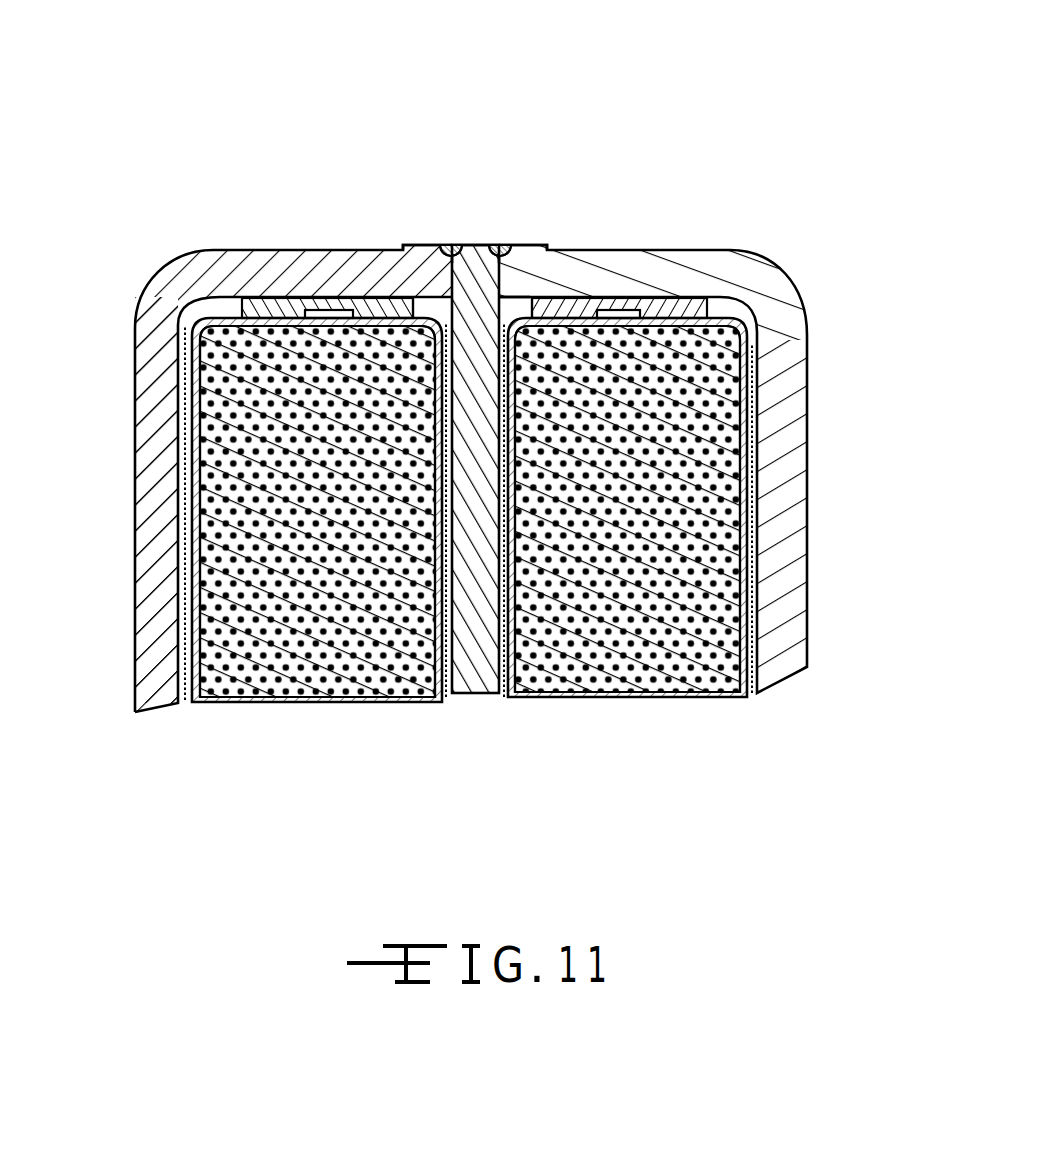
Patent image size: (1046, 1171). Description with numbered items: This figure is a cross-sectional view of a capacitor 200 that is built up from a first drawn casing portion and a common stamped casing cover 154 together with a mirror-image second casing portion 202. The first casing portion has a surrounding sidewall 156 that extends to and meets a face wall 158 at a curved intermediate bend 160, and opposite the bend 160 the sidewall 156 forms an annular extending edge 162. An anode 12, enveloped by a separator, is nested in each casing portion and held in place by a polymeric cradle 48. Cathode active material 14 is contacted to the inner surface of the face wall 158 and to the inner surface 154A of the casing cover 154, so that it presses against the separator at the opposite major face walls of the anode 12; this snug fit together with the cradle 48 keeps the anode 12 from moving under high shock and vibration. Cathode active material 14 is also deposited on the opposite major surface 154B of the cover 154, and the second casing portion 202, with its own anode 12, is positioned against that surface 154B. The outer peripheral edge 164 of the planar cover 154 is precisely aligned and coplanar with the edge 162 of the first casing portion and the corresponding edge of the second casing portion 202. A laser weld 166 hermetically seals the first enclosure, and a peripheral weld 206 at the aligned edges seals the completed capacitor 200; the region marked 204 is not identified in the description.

The anode 12 is at (292, 670).
The cathode active material 14 is at (185, 322).
The polymeric cradle 48 is at (268, 298).
The casing cover 154 is at (468, 675).
The inner surface of cover 154A is at (436, 313).
The opposite major surface of casing cover 154B is at (512, 310).
The sidewall 156 is at (300, 250).
The face wall 158 is at (143, 556).
The curved intermediate bend 160 is at (190, 275).
The annular extending edge 162 is at (437, 253).
The outer peripheral edge 164 is at (478, 247).
The weld 166 is at (452, 250).
The capacitor 200 is at (619, 132).
The second casing portion 202 is at (812, 566).
The lid joint 204 is at (525, 246).
The peripheral weld 206 is at (500, 246).